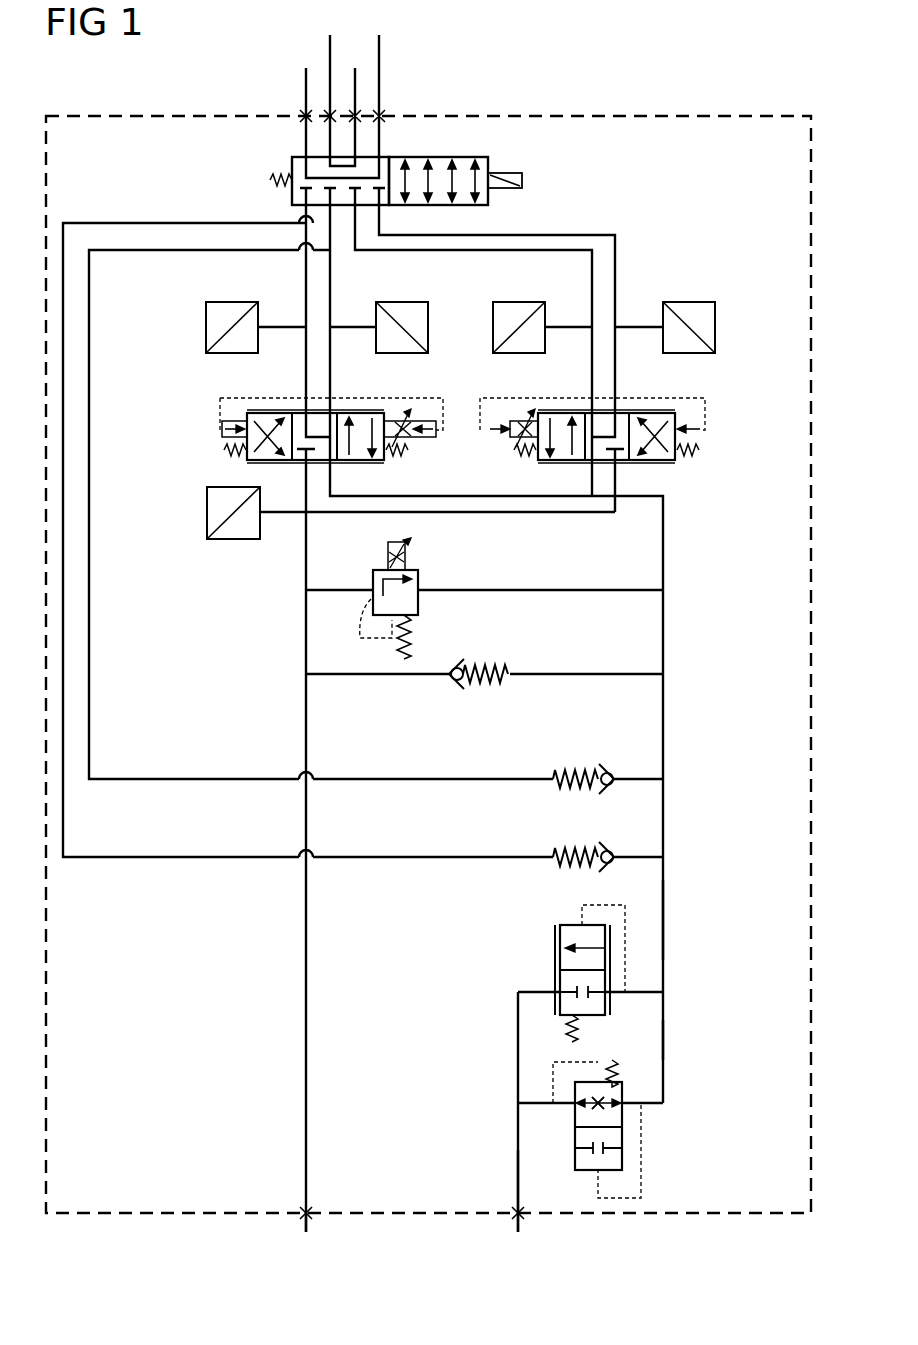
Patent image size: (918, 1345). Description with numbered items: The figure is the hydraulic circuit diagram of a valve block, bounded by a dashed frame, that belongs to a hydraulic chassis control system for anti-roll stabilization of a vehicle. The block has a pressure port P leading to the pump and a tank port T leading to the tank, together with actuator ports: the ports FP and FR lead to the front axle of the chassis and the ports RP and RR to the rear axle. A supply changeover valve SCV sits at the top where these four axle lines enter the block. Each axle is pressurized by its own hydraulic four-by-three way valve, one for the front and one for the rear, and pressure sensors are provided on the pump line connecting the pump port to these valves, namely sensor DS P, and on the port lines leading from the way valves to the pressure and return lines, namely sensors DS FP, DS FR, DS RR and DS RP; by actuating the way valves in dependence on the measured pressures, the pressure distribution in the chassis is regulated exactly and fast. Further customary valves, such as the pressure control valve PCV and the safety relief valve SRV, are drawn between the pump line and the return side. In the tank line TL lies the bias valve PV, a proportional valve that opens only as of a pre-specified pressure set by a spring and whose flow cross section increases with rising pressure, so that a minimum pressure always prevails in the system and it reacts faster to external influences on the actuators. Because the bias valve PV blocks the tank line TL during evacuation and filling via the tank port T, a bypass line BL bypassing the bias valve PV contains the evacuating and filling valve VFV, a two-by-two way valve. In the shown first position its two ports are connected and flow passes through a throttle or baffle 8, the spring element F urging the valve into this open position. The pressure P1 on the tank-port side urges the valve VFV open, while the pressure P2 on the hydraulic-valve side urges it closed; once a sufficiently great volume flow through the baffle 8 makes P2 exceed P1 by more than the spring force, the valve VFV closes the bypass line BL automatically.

The selector control valve SCV is at (426, 181).
The front axle port FP is at (308, 100).
The front axle port FR is at (333, 83).
The rear axle port RR is at (357, 100).
The rear axle port RP is at (379, 83).
The pressure port P is at (304, 1240).
The tank port T is at (517, 1240).
The pressure sensor DS FP is at (254, 314).
The pressure sensor DS FR is at (387, 314).
The pressure sensor DS RR is at (540, 314).
The pressure sensor DS RP is at (673, 314).
The pressure sensor DS P is at (202, 513).
The pressure control valve PCV is at (413, 597).
The safety relief valve SRV is at (487, 662).
The bias valve PV is at (551, 962).
The tank line TL is at (663, 912).
The bypass line BL is at (663, 1037).
The spring element F is at (612, 1060).
The evacuating and filling valve VFV is at (650, 1128).
The pressure on the hydraulic-valve side P2 is at (553, 1078).
The throttle or baffle 8 is at (592, 1105).
The pilot port 1 P1 is at (641, 1170).